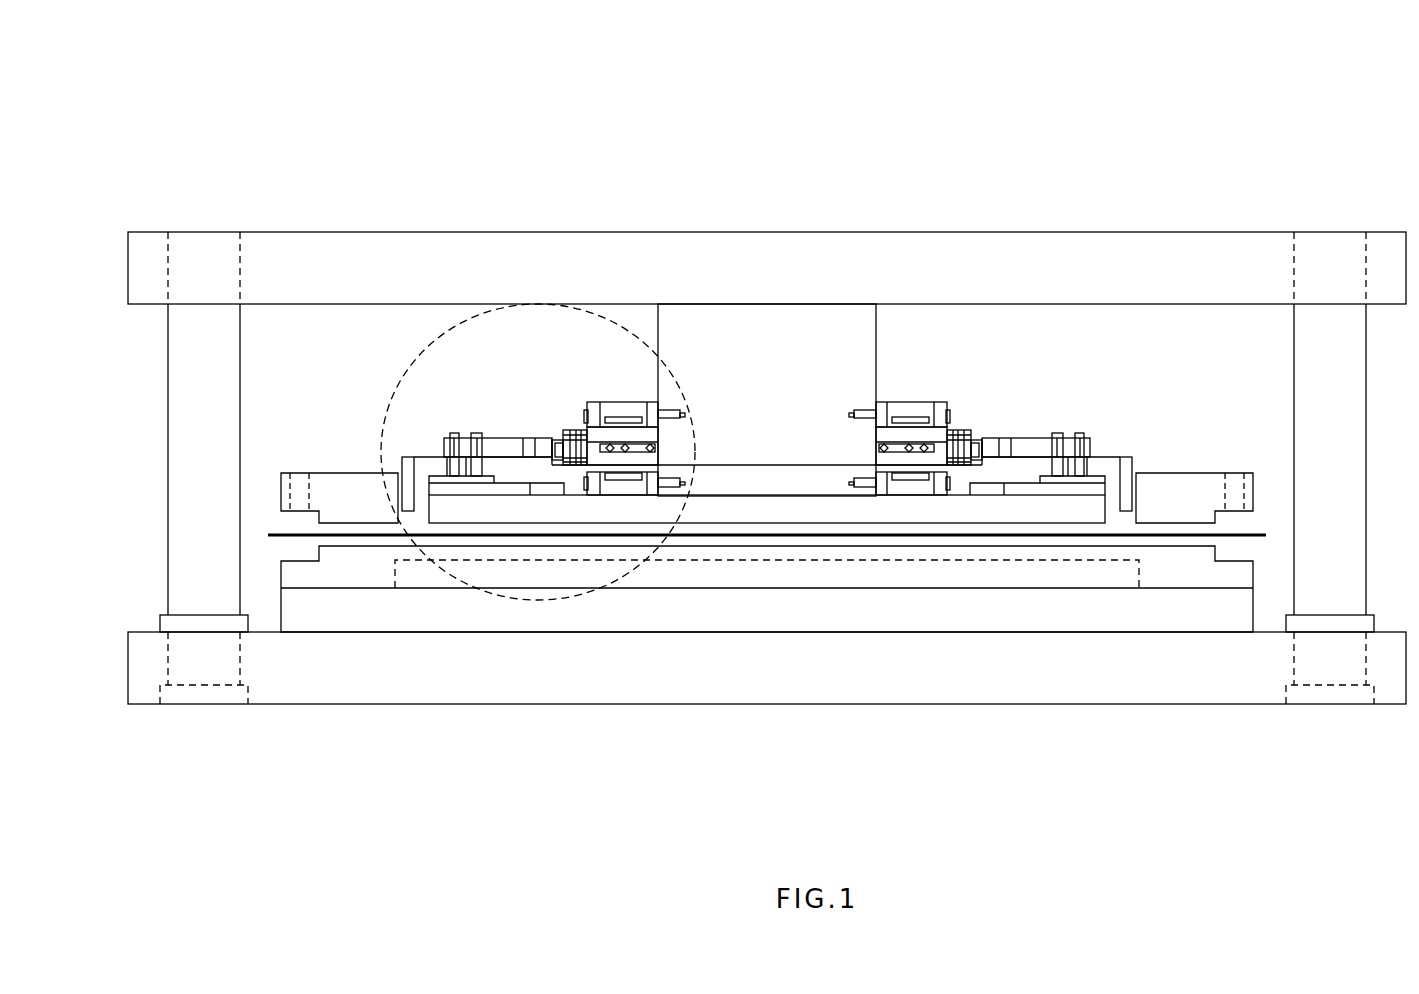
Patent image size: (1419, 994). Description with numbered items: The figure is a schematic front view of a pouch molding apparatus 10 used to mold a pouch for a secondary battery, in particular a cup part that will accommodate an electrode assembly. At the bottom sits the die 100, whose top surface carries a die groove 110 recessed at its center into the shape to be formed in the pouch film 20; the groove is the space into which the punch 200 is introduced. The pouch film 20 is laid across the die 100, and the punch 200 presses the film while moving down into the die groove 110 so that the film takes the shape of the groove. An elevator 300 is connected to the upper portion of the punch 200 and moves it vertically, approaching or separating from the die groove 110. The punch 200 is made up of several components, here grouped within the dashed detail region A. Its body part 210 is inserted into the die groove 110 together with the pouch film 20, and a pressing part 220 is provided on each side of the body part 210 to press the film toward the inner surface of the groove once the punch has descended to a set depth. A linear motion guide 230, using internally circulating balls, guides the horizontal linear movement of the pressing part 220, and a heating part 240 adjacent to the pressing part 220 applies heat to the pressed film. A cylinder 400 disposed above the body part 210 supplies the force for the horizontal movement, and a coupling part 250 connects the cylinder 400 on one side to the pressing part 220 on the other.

The pouch molding apparatus 10 is at (777, 88).
The pouch film 20 is at (366, 536).
The die 100 is at (1185, 566).
The die groove 110 is at (1110, 553).
The punch 200 is at (767, 431).
The body part 210 is at (452, 507).
The pressing part 220 is at (418, 498).
The linear motion guide 230 is at (483, 490).
The heating part 240 is at (407, 458).
The coupling part 250 is at (767, 430).
The elevator 300 is at (828, 337).
The cylinder 400 is at (958, 430).
The detail region A is at (598, 307).